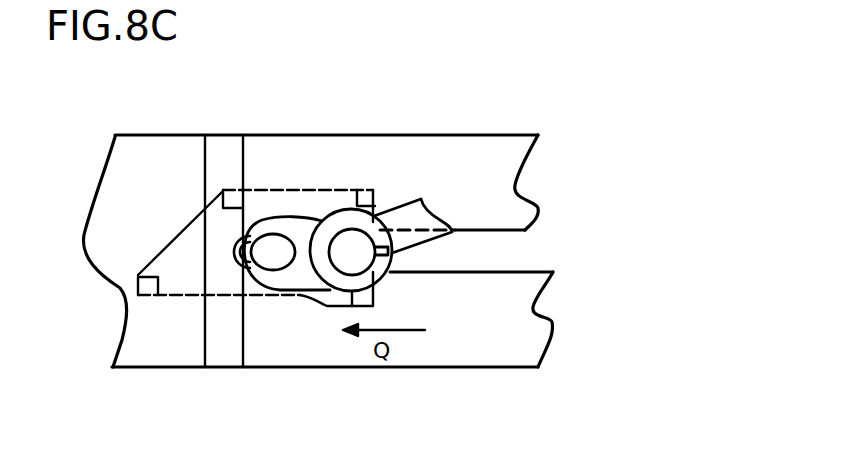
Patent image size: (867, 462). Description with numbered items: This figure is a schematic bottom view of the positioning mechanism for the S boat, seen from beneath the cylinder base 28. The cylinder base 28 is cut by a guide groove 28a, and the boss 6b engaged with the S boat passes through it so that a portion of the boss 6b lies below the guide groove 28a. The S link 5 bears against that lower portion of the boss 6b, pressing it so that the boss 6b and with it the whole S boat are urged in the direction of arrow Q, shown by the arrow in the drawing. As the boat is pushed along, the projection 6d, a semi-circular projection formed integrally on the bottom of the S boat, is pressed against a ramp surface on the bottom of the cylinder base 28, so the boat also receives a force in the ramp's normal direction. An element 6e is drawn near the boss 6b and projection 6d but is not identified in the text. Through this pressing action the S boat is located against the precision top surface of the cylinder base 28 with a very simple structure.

The cylinder base 28 is at (143, 160).
The guide groove 28a is at (503, 253).
The S link 5 is at (421, 199).
The boss 6b is at (356, 252).
The roller 6e is at (297, 223).
The projection 6d is at (241, 248).